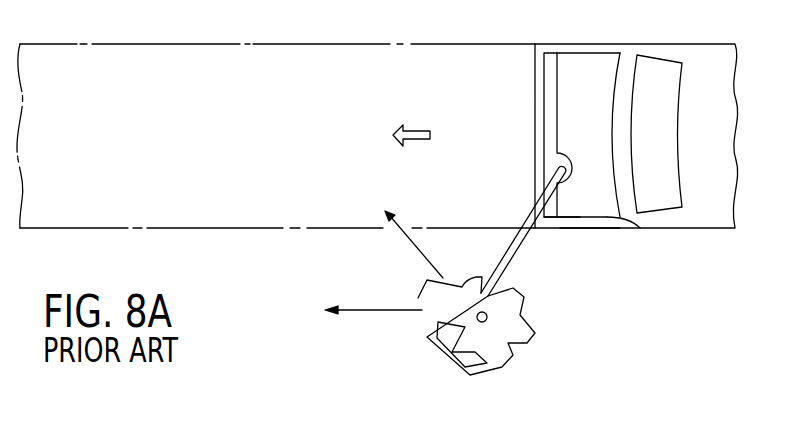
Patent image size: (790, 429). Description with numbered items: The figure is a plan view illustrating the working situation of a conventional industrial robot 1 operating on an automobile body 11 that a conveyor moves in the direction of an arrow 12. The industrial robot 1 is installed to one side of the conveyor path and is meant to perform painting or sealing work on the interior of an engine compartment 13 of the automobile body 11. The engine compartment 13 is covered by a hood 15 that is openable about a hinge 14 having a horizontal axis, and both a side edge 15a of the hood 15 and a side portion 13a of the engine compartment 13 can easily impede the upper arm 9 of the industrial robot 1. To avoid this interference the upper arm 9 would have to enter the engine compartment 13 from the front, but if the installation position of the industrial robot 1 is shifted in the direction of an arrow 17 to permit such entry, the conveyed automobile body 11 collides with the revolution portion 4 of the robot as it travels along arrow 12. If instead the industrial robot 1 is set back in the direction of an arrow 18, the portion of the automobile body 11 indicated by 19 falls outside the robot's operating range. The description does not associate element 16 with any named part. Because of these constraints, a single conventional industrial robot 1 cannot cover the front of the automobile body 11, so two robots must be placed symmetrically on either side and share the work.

The industrial robot 1 is at (527, 353).
The revolution portion 4 is at (440, 350).
The upper arm 9 is at (513, 252).
The automobile body 11 is at (688, 53).
The arrow 12 is at (418, 142).
The engine compartment 13 is at (545, 77).
The side portion of engine compartment 13a is at (566, 230).
The hinge 14 is at (635, 216).
The hood 15 is at (575, 113).
The side edge of hood 15a is at (607, 220).
The bottom wall 16 is at (588, 230).
The arrow 17 is at (413, 250).
The arrow 18 is at (377, 311).
The portion of automobile body 19 is at (580, 67).